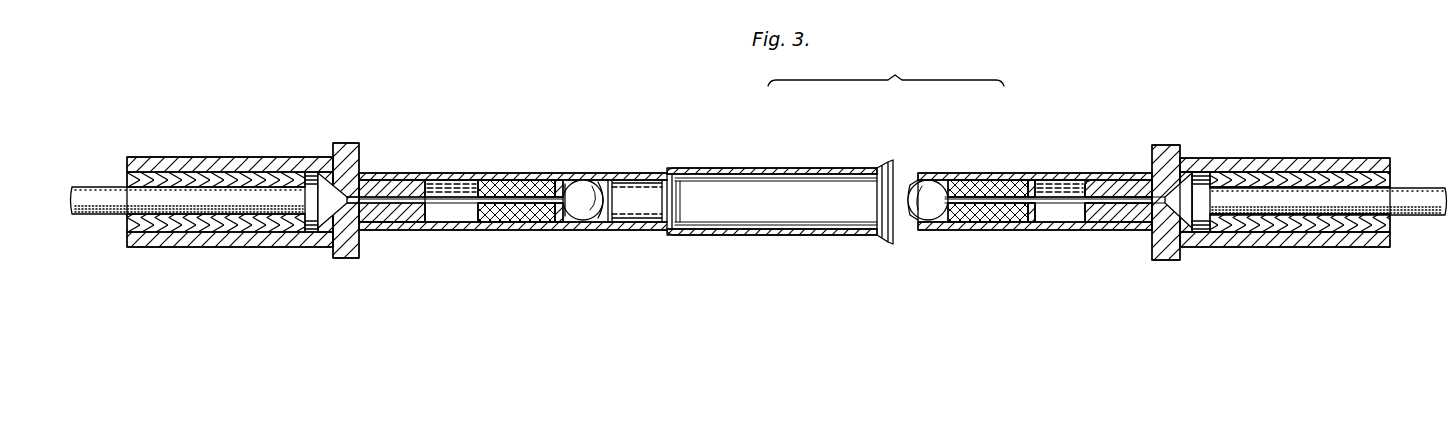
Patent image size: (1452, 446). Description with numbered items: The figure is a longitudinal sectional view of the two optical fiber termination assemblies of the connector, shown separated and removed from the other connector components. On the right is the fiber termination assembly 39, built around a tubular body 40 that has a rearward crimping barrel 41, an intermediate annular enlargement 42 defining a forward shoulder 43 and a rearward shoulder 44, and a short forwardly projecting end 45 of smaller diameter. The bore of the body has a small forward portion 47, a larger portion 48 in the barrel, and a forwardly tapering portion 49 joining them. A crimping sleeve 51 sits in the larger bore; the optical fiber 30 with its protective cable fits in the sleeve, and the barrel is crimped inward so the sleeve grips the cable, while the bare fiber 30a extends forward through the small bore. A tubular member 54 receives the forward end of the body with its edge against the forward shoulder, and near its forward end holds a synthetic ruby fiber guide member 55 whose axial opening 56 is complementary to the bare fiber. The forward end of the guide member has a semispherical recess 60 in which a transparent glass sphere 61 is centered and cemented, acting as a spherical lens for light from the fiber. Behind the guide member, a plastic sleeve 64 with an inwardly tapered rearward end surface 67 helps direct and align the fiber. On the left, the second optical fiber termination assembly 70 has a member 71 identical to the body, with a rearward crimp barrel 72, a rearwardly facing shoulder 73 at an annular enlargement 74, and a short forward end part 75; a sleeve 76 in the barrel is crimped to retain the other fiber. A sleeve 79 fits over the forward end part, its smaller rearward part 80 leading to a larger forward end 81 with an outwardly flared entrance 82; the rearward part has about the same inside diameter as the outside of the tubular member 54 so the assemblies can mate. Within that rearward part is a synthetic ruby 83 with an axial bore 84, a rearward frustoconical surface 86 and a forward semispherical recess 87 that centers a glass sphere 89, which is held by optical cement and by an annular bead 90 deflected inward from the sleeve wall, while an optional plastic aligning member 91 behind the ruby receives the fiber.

The optical fiber 30 is at (1405, 190).
The bare fiber 30a is at (1043, 210).
The fiber termination assembly 39 is at (1202, 128).
The tubular body 40 is at (1302, 160).
The rearward crimping barrel 41 is at (1340, 162).
The intermediate annular enlargement 42 is at (1165, 262).
The forward shoulder 43 is at (1148, 252).
The rearward shoulder 44 is at (1180, 258).
The forwardly projecting end 45 is at (1114, 158).
The forward bore portion 47 is at (1105, 228).
The larger bore portion 48 is at (1262, 232).
The forwardly tapering bore portion 49 is at (1195, 178).
The crimping sleeve 51 is at (1338, 235).
The tubular member 54 is at (1000, 175).
The fiber guide member 55 is at (965, 228).
The opening 56 is at (975, 178).
The semispherical recess 60 is at (925, 222).
The sphere 61 is at (918, 222).
The plastic sleeve 64 is at (1012, 228).
The rearward end surface 67 is at (1035, 185).
The second optical fiber termination assembly 70 is at (398, 140).
The member 71 is at (262, 247).
The rearward crimp barrel 72 is at (210, 248).
The rearwardly facing shoulder 73 is at (330, 258).
The annular enlargement 74 is at (352, 259).
The forward end part 75 is at (392, 232).
The sleeve 76 is at (208, 175).
The sleeve 79 is at (475, 176).
The rearward part 80 is at (498, 226).
The forward end 81 is at (752, 168).
The outwardly flared entrance 82 is at (893, 170).
The synthetic ruby 83 is at (558, 178).
The axial bore 84 is at (538, 225).
The rearward frustoconical surface 86 is at (530, 185).
The forward semispherical recess 87 is at (572, 190).
The glass sphere 89 is at (588, 223).
The annular bead 90 is at (600, 230).
The plastic aligning member 91 is at (497, 220).